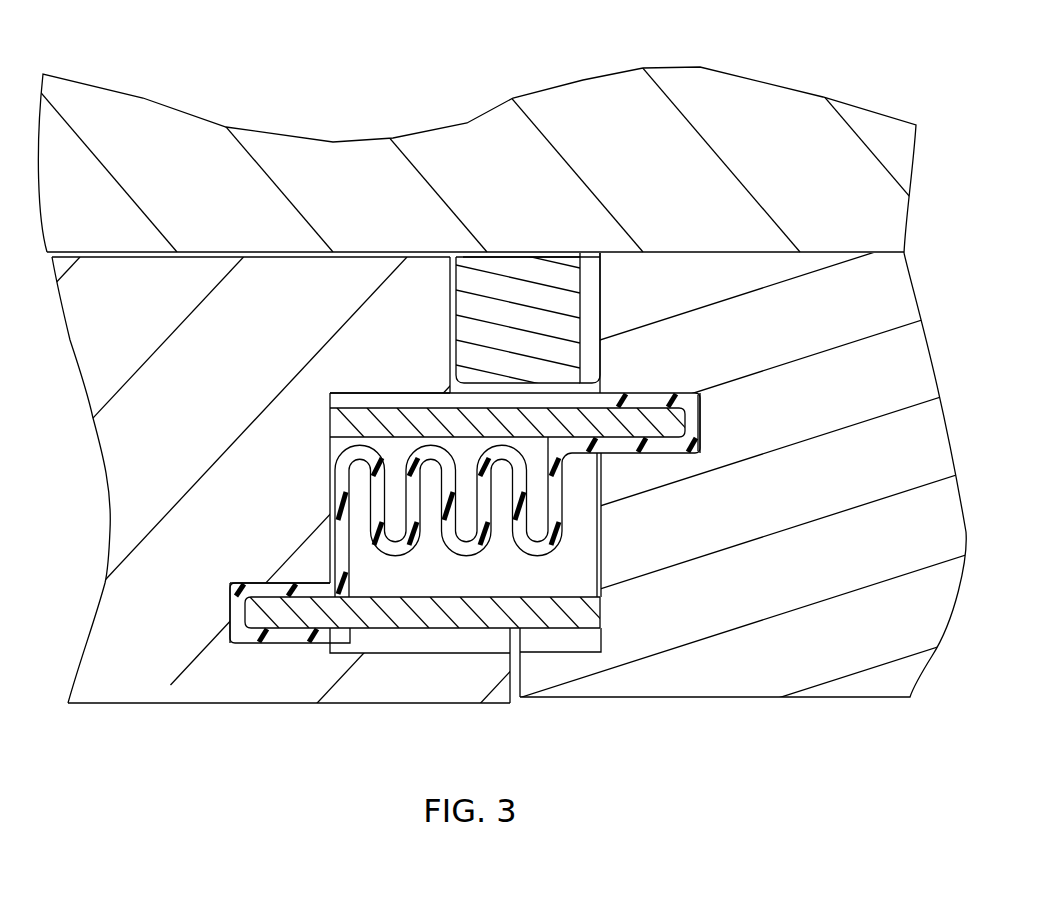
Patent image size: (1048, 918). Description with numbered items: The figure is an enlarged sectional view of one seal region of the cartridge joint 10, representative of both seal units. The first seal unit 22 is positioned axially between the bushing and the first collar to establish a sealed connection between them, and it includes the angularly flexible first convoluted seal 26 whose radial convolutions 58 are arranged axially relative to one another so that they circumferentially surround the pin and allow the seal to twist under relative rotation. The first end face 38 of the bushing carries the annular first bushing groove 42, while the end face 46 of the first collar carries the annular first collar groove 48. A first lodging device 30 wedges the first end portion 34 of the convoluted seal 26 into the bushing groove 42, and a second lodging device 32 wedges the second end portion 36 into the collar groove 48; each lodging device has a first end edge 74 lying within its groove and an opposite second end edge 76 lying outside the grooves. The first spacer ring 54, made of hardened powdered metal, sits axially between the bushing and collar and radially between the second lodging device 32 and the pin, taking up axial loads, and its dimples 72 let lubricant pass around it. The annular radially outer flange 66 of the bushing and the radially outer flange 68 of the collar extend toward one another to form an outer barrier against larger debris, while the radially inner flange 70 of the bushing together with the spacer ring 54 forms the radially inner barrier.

The cartridge joint 10 is at (963, 96).
The first seal unit 22 is at (717, 608).
The first convoluted seal 26 is at (342, 490).
The first lodging device 30 is at (397, 613).
The second lodging device 32 is at (397, 422).
The first end portion 34 is at (232, 632).
The second end portion 36 is at (705, 428).
The first end face 38 is at (332, 463).
The first bushing groove 42 is at (262, 585).
The end face 46 is at (597, 495).
The first collar groove 48 is at (637, 398).
The first spacer ring 54 is at (503, 268).
The radial convolutions 58 is at (394, 558).
The radially outer flange 66 is at (465, 683).
The radially outer flange 68 is at (583, 687).
The radially inner flange 70 is at (408, 312).
The dimples 72 is at (590, 280).
The first end edge 74 is at (700, 435).
The second end edge 76 is at (330, 412).